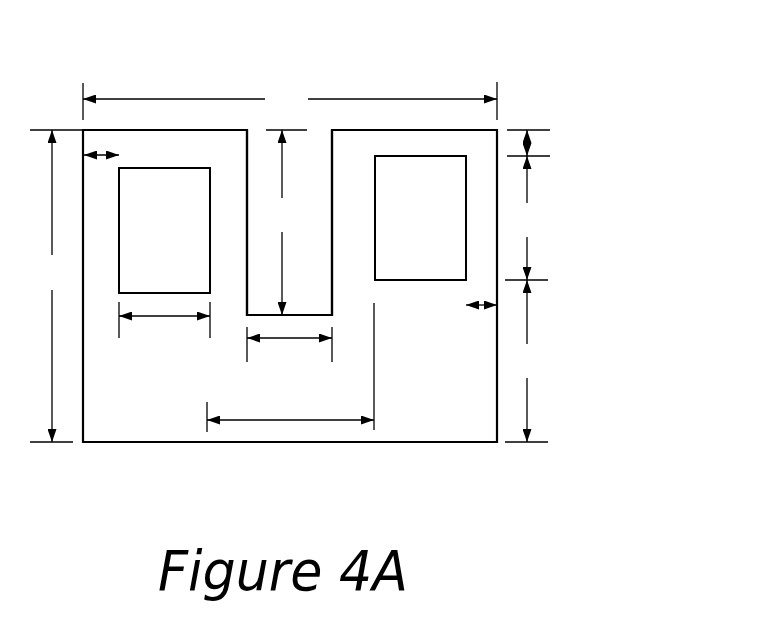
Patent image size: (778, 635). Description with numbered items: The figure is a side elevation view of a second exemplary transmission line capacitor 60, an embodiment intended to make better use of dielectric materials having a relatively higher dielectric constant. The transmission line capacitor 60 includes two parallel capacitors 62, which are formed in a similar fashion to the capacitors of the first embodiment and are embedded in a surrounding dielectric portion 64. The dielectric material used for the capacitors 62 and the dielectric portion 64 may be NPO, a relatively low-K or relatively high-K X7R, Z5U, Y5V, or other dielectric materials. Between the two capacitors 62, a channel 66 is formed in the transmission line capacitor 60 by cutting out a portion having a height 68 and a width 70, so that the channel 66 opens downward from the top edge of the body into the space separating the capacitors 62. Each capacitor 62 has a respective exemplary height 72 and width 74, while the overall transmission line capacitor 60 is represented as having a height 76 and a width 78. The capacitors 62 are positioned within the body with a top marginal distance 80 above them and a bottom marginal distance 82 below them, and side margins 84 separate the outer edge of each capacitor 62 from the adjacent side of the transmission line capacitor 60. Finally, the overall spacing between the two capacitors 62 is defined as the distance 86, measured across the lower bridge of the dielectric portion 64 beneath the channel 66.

The transmission line capacitor 60 is at (582, 82).
The capacitors 62 is at (177, 242).
The dielectric portion 64 is at (112, 426).
The channel 66 is at (305, 278).
The height 68 is at (286, 222).
The width 70 is at (280, 342).
The height 72 is at (526, 218).
The width 74 is at (145, 320).
The height 76 is at (56, 286).
The width 78 is at (290, 101).
The top marginal distance 80 is at (535, 145).
The bottom marginal distance 82 is at (526, 361).
The side margins 84 is at (100, 152).
The distance 86 is at (270, 420).